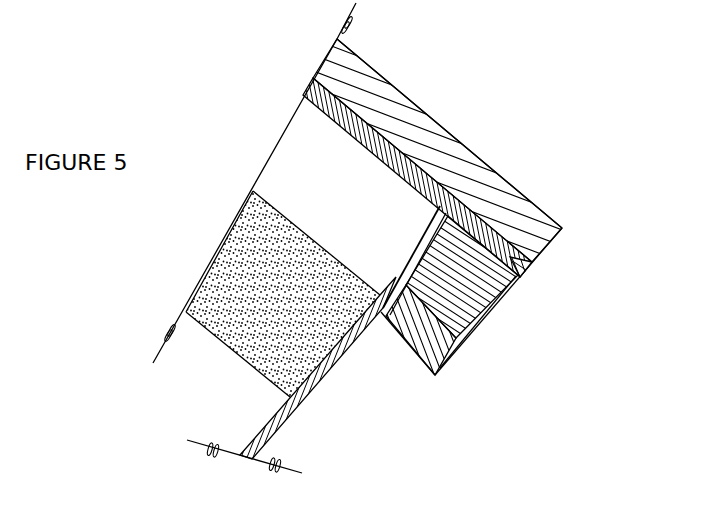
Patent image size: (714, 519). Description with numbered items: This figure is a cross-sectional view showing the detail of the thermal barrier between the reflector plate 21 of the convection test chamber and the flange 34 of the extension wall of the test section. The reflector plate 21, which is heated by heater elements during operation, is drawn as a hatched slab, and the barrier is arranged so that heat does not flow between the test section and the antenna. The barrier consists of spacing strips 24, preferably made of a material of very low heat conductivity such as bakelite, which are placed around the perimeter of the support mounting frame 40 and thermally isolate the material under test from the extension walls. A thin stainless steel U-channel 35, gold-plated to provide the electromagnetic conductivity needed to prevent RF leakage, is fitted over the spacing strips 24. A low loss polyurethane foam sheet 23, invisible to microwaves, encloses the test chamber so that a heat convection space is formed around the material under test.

The reflector plate 21 is at (458, 158).
The spacing strips 24 is at (513, 287).
The support mounting frame 40 is at (532, 267).
The U-channel 35 is at (488, 300).
The flange 34 is at (432, 349).
The low loss polyurethane foam sheet 23 is at (298, 350).